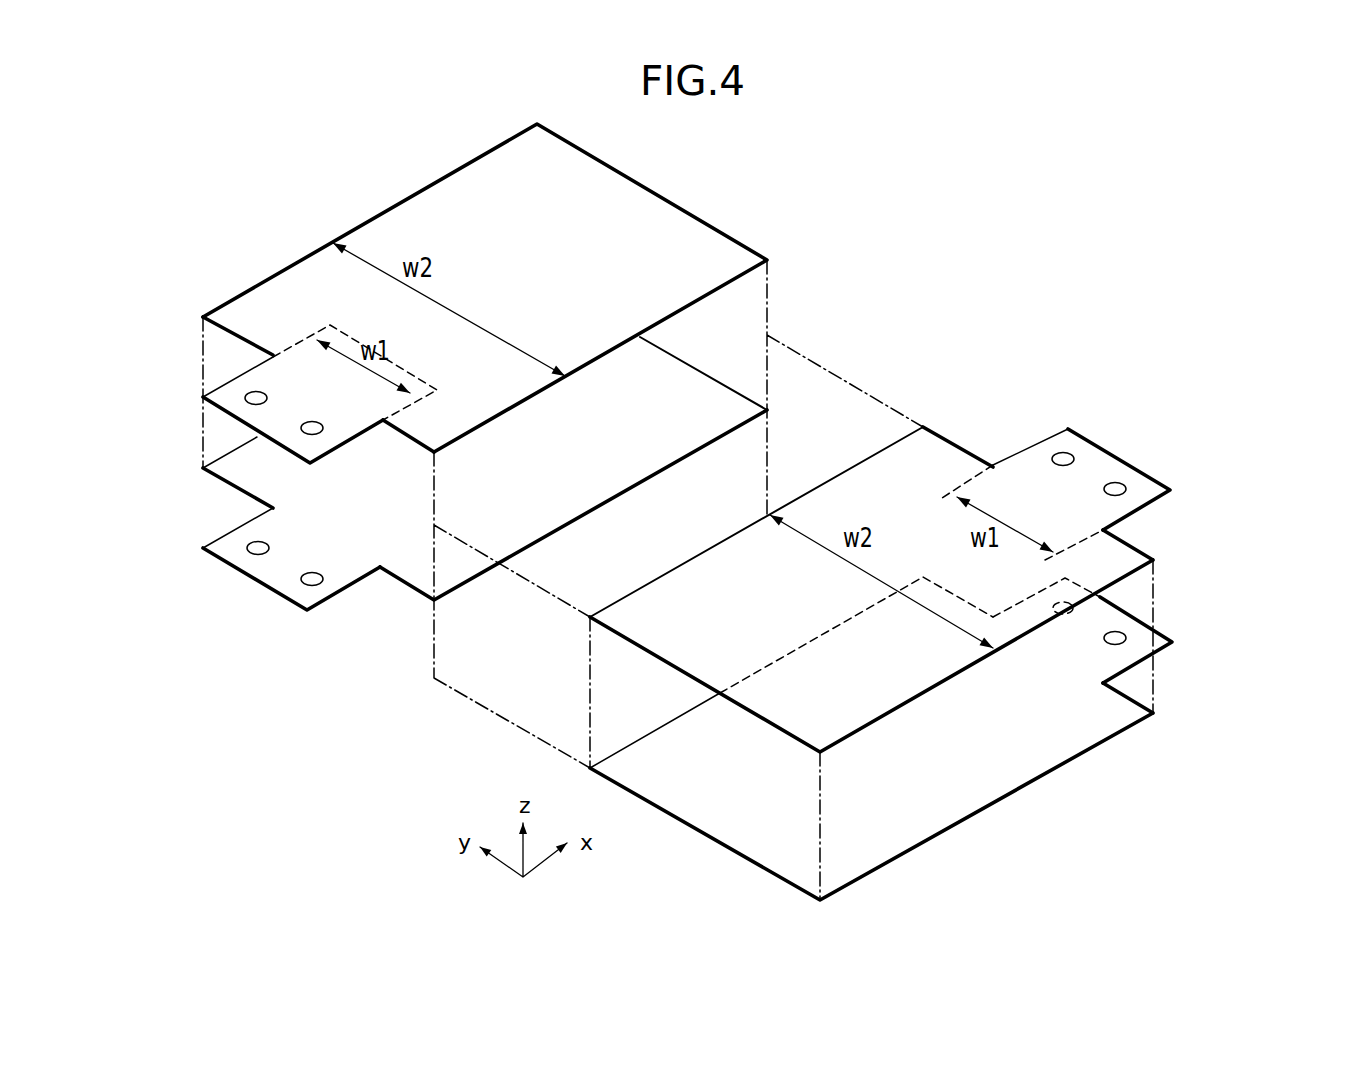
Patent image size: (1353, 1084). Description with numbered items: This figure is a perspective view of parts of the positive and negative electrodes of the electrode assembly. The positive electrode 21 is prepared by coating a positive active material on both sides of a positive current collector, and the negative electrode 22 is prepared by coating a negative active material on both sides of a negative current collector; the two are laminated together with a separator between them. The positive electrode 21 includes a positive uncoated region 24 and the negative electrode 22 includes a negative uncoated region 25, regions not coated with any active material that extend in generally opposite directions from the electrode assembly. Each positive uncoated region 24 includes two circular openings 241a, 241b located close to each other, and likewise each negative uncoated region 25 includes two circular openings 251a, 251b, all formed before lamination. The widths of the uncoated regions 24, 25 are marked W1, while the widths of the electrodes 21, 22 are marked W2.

The positive electrode 21 is at (587, 167).
The negative electrode 22 is at (942, 448).
The positive uncoated region 24 is at (222, 393).
The opening 241a is at (252, 551).
The opening 241b is at (313, 436).
The negative uncoated region 25 is at (1107, 462).
The opening 251a is at (1062, 453).
The opening 251b is at (1127, 490).